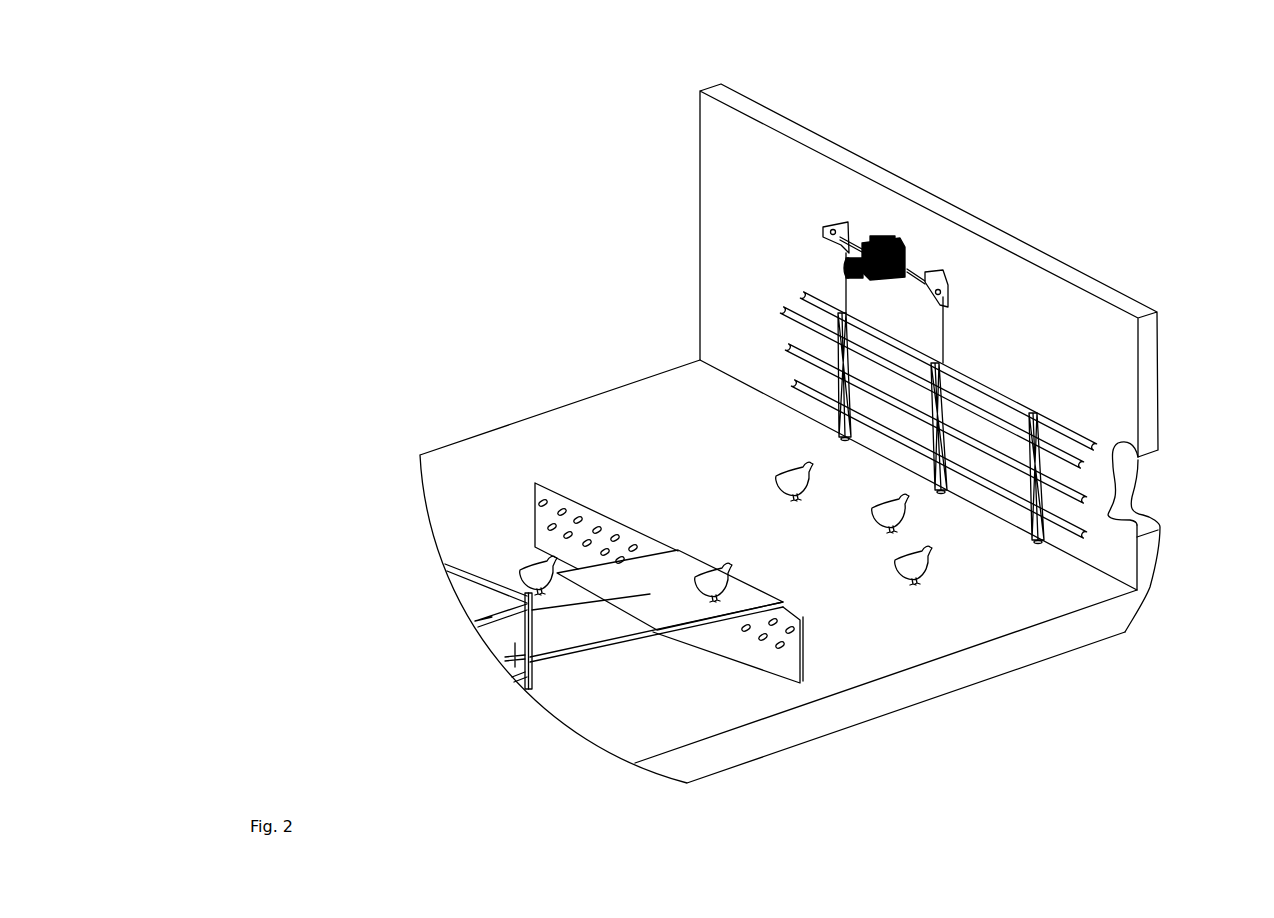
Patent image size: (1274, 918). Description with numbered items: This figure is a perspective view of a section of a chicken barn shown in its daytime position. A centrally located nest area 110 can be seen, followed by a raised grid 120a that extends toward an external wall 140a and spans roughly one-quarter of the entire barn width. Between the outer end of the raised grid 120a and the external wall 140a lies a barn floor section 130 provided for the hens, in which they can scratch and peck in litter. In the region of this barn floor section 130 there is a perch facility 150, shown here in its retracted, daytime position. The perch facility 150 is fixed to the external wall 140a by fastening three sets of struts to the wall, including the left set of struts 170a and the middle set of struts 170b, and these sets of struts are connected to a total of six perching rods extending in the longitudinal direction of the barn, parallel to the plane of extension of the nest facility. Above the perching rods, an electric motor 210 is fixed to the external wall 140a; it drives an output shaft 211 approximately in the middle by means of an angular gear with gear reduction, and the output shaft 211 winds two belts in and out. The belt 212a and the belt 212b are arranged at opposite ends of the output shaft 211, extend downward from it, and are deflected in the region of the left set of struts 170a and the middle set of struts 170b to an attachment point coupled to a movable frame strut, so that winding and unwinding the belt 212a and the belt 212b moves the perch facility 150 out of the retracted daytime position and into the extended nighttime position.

The nest area 110 is at (508, 633).
The raised grid 120a is at (598, 587).
The barn floor section 130 is at (695, 435).
The external wall 140a is at (1037, 303).
The perch facility 150 is at (1103, 407).
The left set of struts 170a is at (837, 387).
The middle set of struts 170b is at (937, 440).
The electric motor 210 is at (866, 253).
The output shaft 211 is at (920, 272).
The belt 212a is at (843, 287).
The belt 212b is at (943, 335).